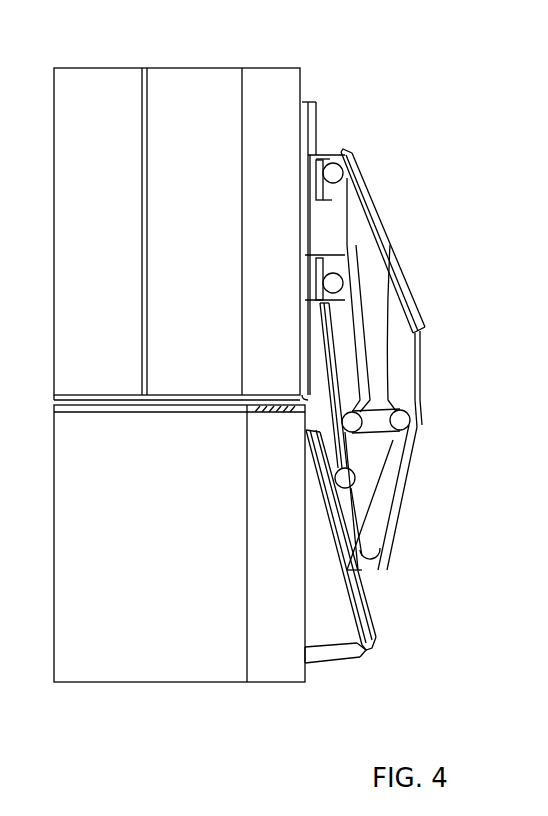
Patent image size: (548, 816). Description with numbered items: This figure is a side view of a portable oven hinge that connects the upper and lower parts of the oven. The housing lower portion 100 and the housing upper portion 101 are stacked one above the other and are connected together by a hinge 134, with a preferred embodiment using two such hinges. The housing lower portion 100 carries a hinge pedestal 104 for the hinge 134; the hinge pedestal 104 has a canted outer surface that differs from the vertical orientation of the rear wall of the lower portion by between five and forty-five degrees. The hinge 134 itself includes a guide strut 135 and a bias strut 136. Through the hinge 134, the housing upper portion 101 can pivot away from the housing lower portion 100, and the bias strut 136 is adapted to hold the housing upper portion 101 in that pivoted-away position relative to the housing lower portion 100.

The housing lower portion 100 is at (168, 548).
The housing upper portion 101 is at (224, 75).
The hinge pedestal 104 is at (340, 615).
The hinge 134 is at (417, 382).
The guide strut 135 is at (399, 300).
The bias strut 136 is at (342, 368).